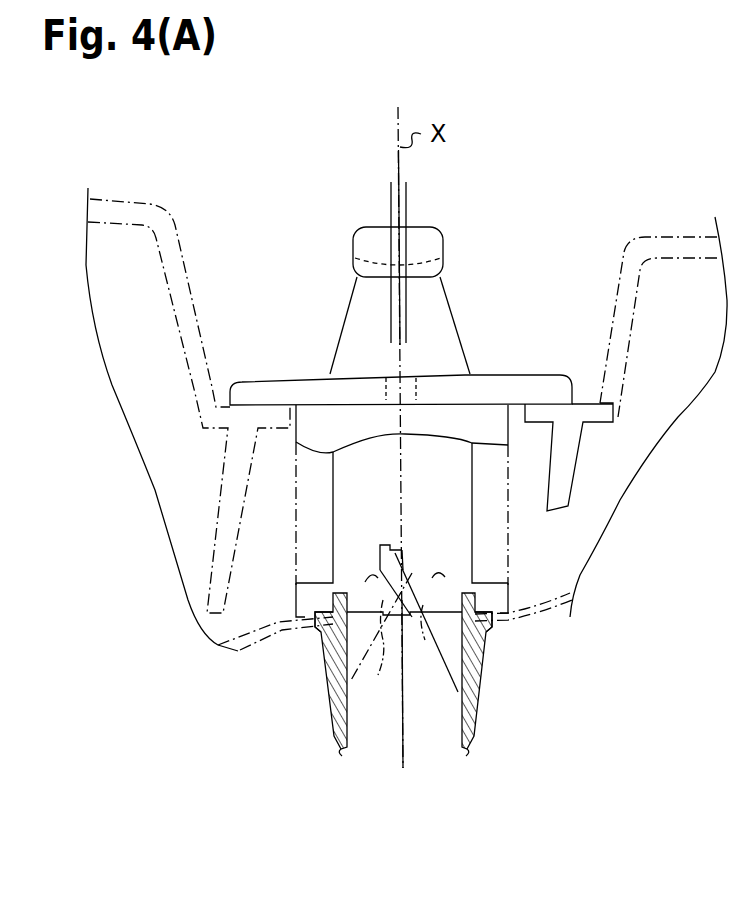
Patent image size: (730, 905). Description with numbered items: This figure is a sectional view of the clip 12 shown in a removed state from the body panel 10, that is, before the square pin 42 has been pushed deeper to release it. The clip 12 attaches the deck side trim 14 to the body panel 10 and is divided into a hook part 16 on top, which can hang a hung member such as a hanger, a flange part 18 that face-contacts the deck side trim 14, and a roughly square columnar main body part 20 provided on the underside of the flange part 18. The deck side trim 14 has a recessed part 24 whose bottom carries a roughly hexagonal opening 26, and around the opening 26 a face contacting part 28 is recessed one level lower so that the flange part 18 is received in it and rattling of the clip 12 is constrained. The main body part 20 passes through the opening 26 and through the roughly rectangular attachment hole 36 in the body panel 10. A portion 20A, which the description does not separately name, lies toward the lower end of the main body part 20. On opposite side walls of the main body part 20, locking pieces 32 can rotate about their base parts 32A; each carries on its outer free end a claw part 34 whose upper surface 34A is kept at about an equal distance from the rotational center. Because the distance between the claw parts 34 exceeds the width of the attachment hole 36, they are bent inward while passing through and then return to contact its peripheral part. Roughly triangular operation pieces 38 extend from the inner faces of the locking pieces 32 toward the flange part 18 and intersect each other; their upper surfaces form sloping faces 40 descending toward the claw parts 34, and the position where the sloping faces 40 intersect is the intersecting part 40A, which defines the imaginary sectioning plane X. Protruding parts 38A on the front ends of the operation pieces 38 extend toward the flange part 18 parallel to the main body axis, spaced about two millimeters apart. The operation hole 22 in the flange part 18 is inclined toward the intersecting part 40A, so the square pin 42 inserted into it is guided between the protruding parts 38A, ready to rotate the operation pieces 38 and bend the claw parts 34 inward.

The body panel 10 is at (572, 618).
The clip 12 is at (511, 312).
The deck side trim 14 is at (662, 237).
The hook part 16 is at (430, 240).
The flange part 18 is at (276, 382).
The main body part 20 is at (514, 439).
The lower end of body portion 20A is at (318, 612).
The operation hole 22 is at (404, 392).
The recessed part 24 is at (622, 290).
The opening 26 is at (516, 400).
The face contacting part 28 is at (195, 393).
The locking piece 32 is at (330, 705).
The base part 32A is at (343, 756).
The claw part 34 is at (320, 634).
The upper surface 34A is at (310, 621).
The attachment hole 36 is at (446, 690).
The operation piece 38 is at (368, 582).
The protruding part 38A is at (382, 544).
The sloping face 40 is at (425, 640).
The intersecting part 40A is at (408, 547).
The square pin 42 is at (410, 200).